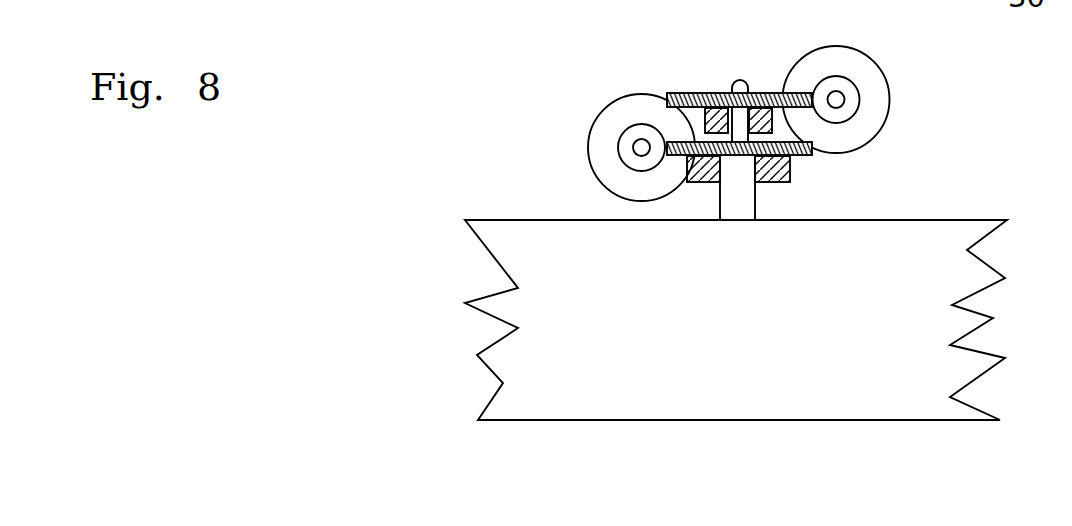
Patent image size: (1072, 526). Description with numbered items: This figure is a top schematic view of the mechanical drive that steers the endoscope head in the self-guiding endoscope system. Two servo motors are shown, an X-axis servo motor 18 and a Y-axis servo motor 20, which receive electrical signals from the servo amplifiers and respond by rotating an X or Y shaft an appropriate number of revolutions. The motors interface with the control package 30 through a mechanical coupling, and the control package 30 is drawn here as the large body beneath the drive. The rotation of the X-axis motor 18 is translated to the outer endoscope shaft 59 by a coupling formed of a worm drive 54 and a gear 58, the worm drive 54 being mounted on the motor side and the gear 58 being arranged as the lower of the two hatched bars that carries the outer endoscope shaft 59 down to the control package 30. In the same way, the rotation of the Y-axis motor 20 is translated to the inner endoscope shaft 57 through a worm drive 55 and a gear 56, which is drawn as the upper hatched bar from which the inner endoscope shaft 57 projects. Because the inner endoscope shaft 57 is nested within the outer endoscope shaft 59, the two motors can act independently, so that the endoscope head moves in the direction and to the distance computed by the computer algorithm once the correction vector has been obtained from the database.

The X-axis servo motor 18 is at (617, 150).
The Y-axis servo motor 20 is at (890, 104).
The control package 30 is at (736, 320).
The worm drive 54 is at (588, 158).
The worm drive 55 is at (848, 82).
The gear 56 is at (685, 91).
The inner endoscope shaft 57 is at (742, 80).
The gear 58 is at (820, 153).
The outer endoscope shaft 59 is at (740, 197).